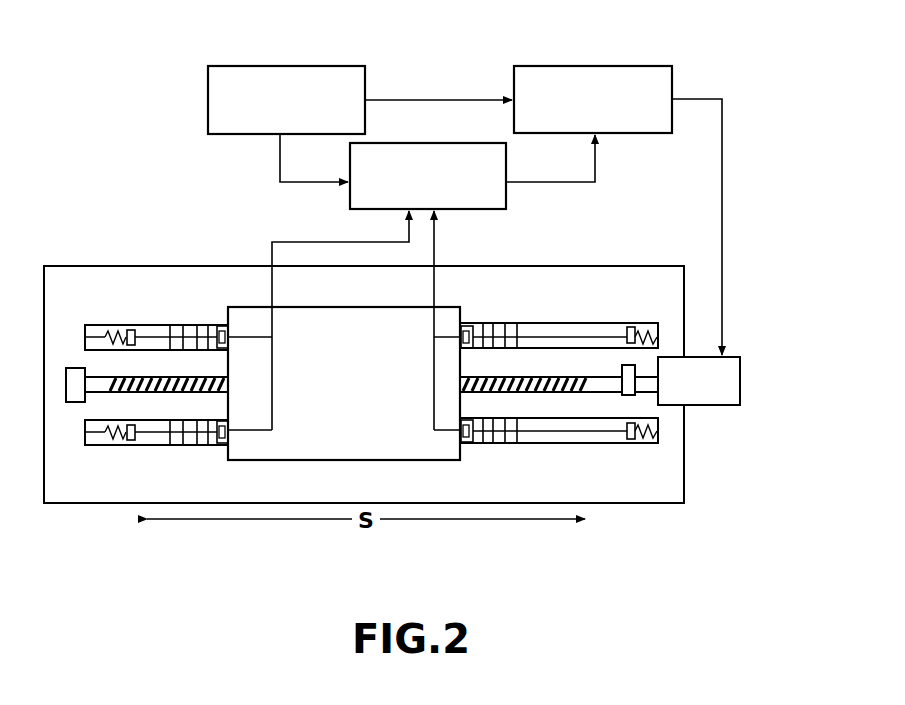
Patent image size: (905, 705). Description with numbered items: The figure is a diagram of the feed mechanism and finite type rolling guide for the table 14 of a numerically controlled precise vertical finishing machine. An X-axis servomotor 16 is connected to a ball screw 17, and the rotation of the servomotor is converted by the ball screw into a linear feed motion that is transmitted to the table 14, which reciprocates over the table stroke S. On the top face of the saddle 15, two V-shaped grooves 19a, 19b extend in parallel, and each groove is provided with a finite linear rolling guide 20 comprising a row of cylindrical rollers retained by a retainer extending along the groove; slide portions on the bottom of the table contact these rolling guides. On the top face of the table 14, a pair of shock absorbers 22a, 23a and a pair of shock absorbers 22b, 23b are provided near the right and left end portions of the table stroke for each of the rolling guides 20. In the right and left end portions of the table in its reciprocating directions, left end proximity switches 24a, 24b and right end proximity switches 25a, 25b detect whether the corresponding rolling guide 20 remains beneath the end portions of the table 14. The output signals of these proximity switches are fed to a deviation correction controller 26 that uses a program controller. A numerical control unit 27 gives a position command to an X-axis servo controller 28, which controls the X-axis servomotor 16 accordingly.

The table 14 is at (318, 460).
The saddle 15 is at (540, 266).
The X-axis servomotor 16 is at (712, 405).
The ball screw 17 is at (508, 375).
The V-shaped groove 19a is at (566, 332).
The V-shaped groove 19b is at (560, 443).
The finite linear rolling guide 20 is at (183, 328).
The shock absorber 22a is at (120, 330).
The shock absorber 22b is at (118, 445).
The shock absorber 23a is at (631, 327).
The shock absorber 23b is at (633, 443).
The left end proximity switch 24a is at (222, 326).
The left end proximity switch 24b is at (222, 446).
The right end proximity switch 25a is at (464, 326).
The right end proximity switch 25b is at (465, 443).
The deviation correction controller 26 is at (438, 143).
The numerical control unit 27 is at (330, 66).
The X-axis servo controller 28 is at (583, 66).